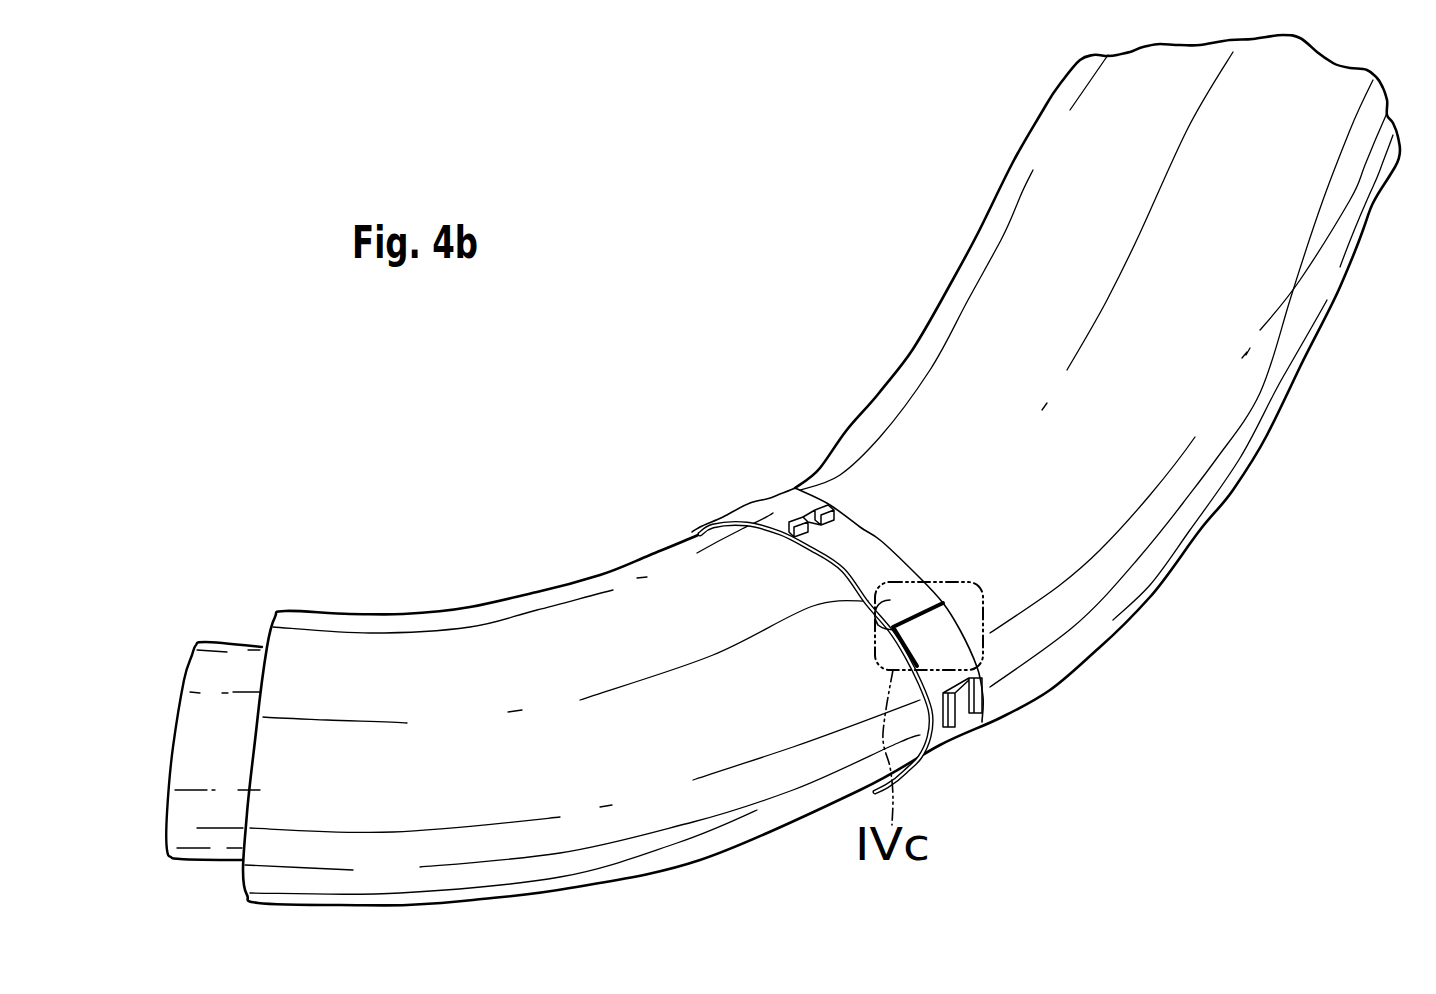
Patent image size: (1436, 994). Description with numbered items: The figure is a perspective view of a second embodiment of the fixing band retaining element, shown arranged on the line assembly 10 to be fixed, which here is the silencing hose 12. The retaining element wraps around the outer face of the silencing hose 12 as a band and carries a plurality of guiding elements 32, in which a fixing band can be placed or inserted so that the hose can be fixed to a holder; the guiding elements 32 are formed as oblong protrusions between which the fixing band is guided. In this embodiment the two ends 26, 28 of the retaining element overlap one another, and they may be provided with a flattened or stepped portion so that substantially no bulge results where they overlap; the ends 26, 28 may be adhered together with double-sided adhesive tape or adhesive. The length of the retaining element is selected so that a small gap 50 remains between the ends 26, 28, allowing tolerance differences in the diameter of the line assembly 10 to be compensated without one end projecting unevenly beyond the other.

The line assembly 10 is at (928, 199).
The silencing hose 12 is at (493, 657).
The end of the fixing band retaining element 26 is at (908, 597).
The end of the fixing band retaining element 28 is at (933, 627).
The guiding element 32 is at (800, 497).
The gap 50 is at (873, 607).